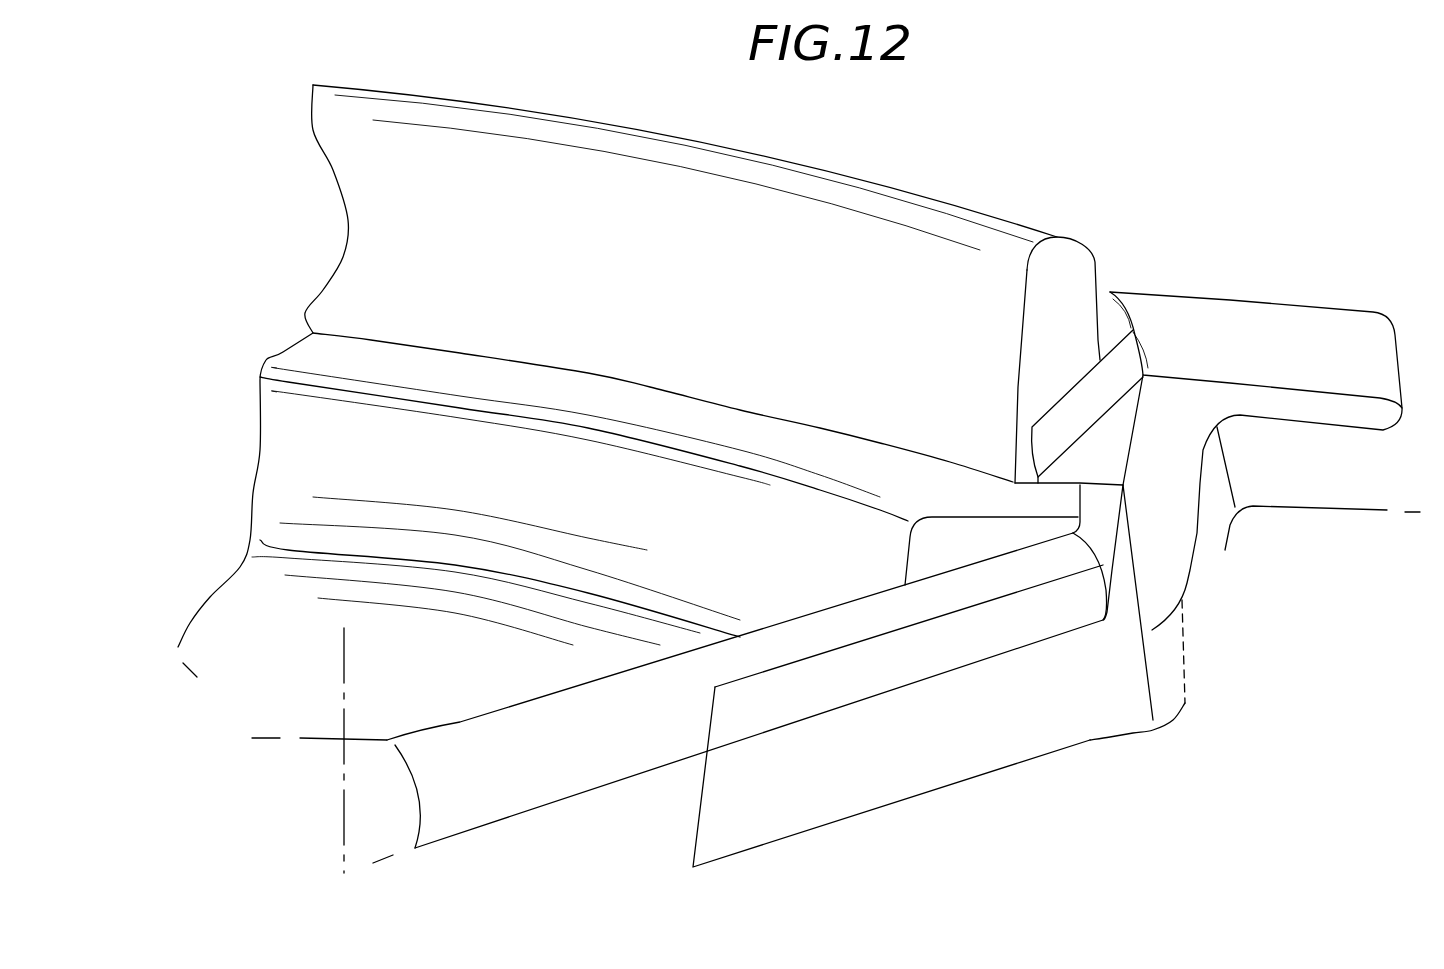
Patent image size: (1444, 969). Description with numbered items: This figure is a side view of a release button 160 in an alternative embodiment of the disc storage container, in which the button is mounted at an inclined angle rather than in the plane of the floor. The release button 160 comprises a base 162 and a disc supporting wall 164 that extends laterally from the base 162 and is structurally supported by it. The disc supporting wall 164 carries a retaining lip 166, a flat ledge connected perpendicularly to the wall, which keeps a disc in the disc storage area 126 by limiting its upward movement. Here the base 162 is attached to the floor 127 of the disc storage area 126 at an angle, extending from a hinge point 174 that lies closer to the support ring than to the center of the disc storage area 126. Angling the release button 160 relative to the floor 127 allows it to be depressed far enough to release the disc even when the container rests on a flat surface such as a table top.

The disc storage area 126 is at (297, 521).
The floor 127 is at (460, 687).
The release button 160 is at (1168, 587).
The base 162 is at (912, 765).
The disc supporting wall 164 is at (1102, 520).
The retaining lip 166 is at (1067, 472).
The hinge point 174 is at (345, 828).